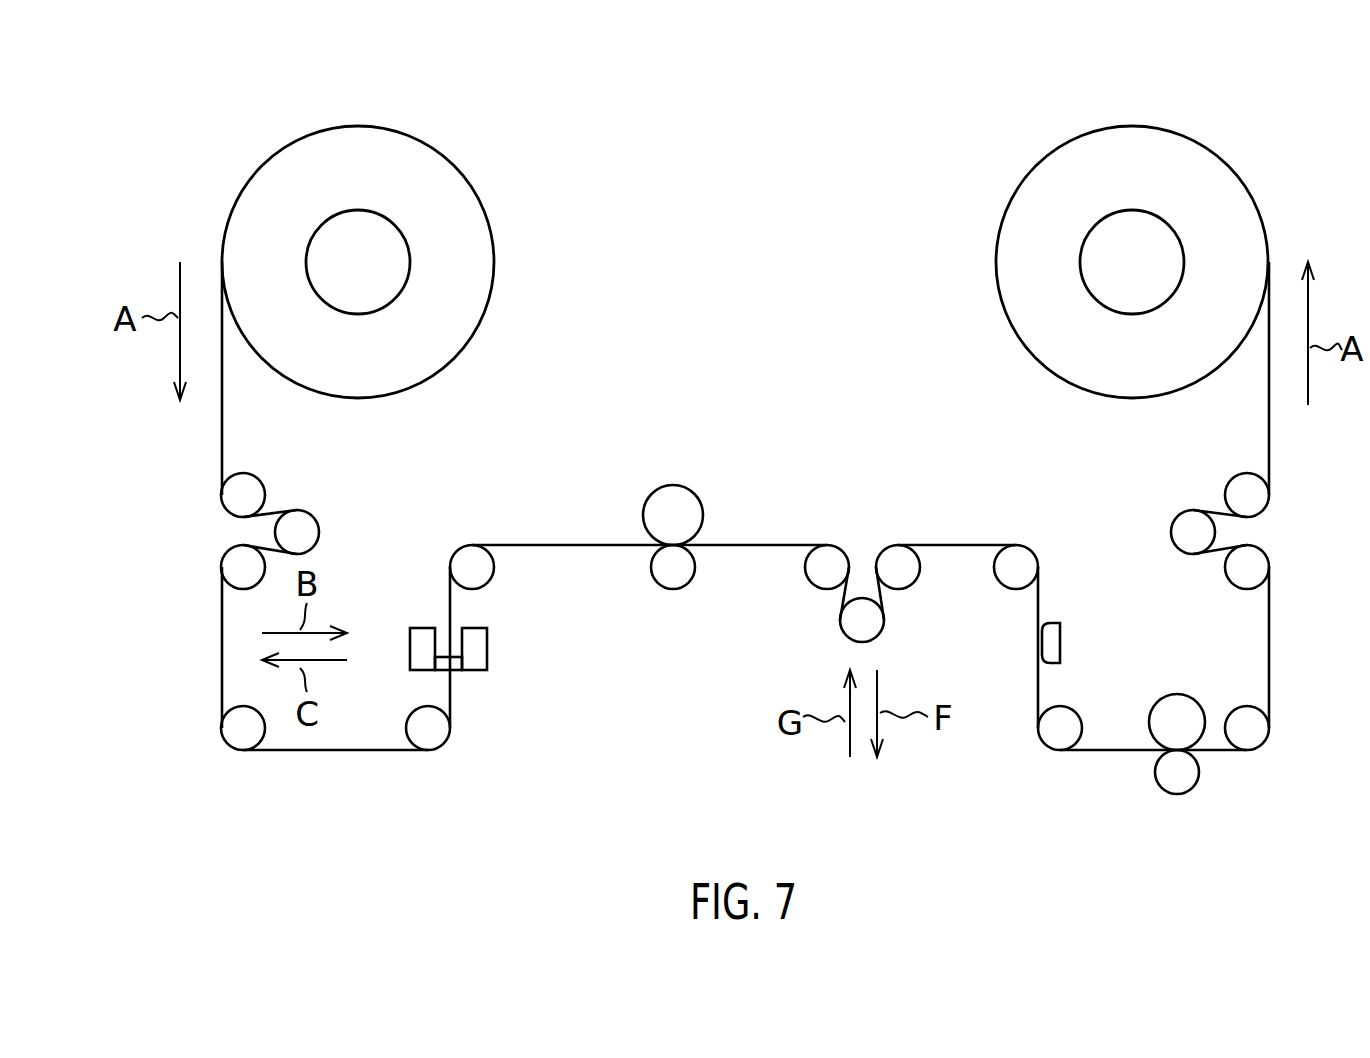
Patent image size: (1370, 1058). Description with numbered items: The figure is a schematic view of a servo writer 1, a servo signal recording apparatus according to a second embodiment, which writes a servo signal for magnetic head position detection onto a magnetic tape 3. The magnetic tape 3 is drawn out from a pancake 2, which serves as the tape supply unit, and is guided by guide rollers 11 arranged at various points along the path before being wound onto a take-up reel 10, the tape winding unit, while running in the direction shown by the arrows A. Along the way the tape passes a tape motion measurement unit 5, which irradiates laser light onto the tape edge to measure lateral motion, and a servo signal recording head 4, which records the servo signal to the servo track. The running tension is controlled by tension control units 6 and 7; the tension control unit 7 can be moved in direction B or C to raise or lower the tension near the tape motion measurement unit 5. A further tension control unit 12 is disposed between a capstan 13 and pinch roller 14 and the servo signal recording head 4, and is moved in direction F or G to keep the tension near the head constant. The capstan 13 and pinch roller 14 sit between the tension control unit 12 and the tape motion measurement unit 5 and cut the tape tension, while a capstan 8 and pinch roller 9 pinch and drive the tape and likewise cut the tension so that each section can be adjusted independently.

The servo writer 1 is at (526, 175).
The pancake 2 is at (350, 150).
The magnetic tape 3 is at (540, 540).
The servo signal recording head 4 is at (1052, 642).
The tape motion measurement unit 5 is at (477, 655).
The tension control unit 6 is at (1190, 532).
The tension control unit 7 is at (303, 530).
The capstan 8 is at (1168, 770).
The pinch roller 9 is at (1170, 713).
The take-up reel 10 is at (1136, 150).
The guide rollers 11 is at (228, 567).
The tension control unit 12 is at (885, 627).
The capstan 13 is at (670, 570).
The pinch roller 14 is at (673, 510).